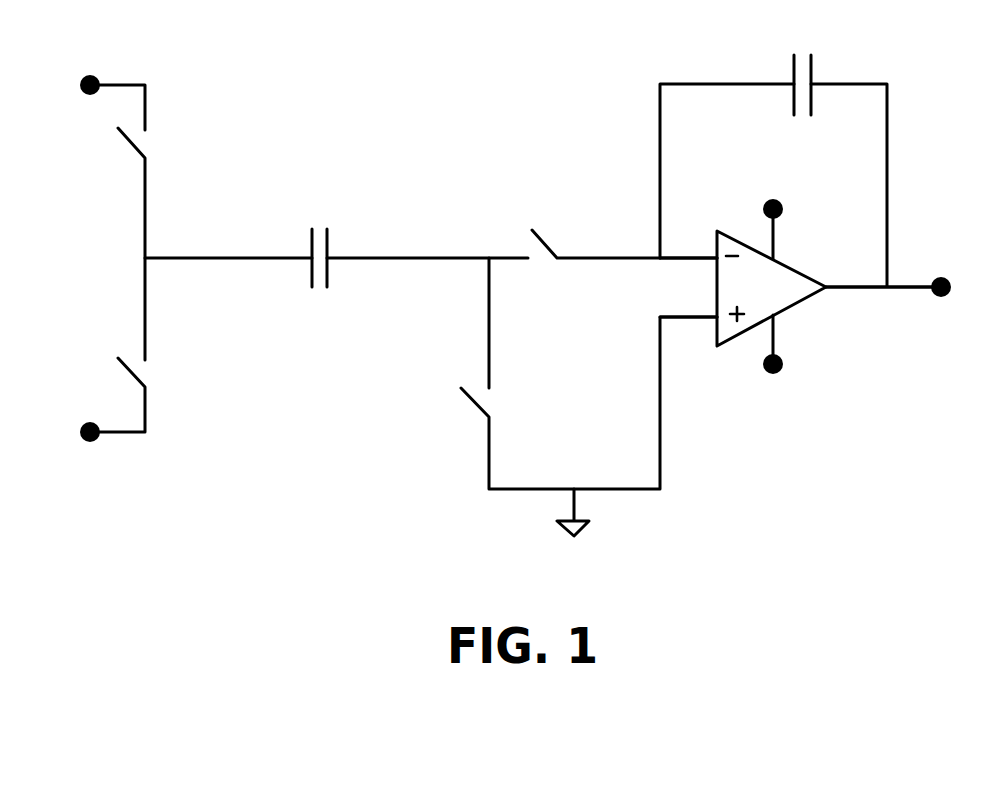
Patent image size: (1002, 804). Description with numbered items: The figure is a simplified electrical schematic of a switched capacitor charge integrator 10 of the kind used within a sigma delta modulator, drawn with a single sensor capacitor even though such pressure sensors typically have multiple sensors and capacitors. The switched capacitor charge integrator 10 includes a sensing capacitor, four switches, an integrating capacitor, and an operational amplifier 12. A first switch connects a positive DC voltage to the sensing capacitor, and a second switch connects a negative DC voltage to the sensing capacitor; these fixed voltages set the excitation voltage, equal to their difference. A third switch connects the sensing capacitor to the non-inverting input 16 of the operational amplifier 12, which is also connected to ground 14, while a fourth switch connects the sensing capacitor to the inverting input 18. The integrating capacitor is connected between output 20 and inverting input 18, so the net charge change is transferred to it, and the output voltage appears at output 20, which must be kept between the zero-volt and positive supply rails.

The switched capacitor charge integrator 10 is at (513, 334).
The operational amplifier 12 is at (788, 265).
The ground 14 is at (586, 527).
The non-inverting input 16 is at (680, 318).
The inverting input 18 is at (678, 257).
The output 20 is at (852, 287).